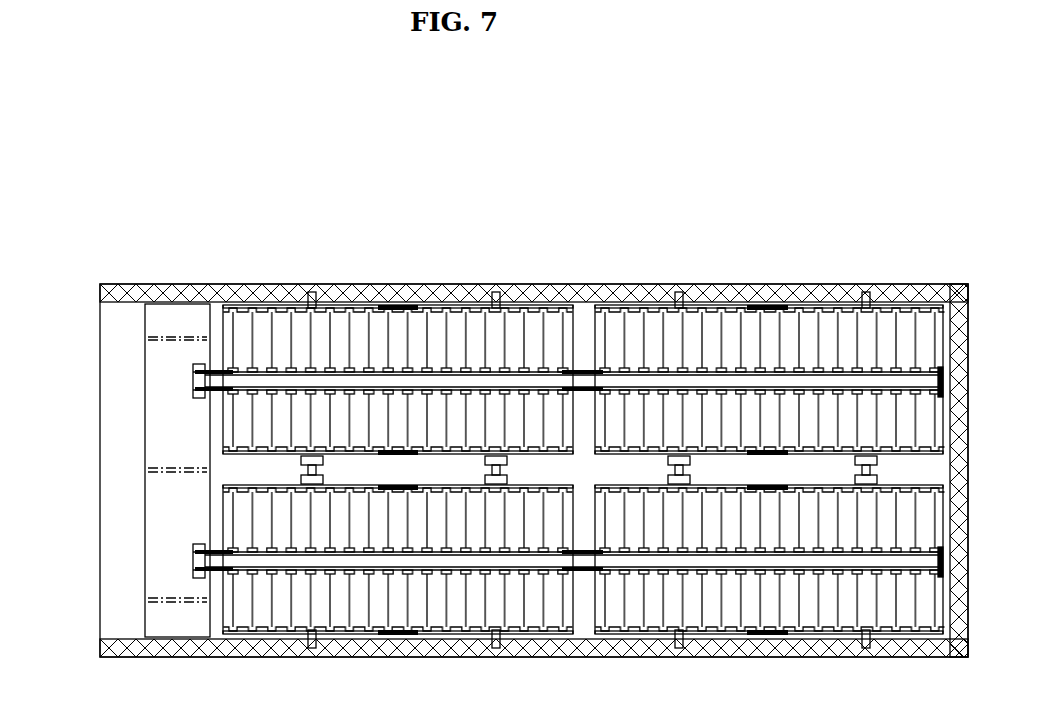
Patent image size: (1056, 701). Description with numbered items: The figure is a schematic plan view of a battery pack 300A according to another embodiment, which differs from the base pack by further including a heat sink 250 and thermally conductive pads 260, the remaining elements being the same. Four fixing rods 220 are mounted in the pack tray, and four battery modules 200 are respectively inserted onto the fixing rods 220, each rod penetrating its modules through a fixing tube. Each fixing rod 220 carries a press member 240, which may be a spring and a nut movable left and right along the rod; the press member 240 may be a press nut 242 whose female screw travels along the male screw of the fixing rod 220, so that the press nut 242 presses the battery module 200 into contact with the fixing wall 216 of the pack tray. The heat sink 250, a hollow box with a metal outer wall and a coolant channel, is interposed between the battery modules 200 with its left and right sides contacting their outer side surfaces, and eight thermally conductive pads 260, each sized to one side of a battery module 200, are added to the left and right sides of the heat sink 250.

The battery pack 300A is at (156, 180).
The fixing wall 216 is at (765, 291).
The battery module 200 is at (541, 322).
The heat sink 250 is at (399, 378).
The thermally conductive pad 260 is at (915, 370).
The fixing rod 220 is at (495, 292).
The press nut 242 is at (310, 455).
The press member 240 is at (292, 468).